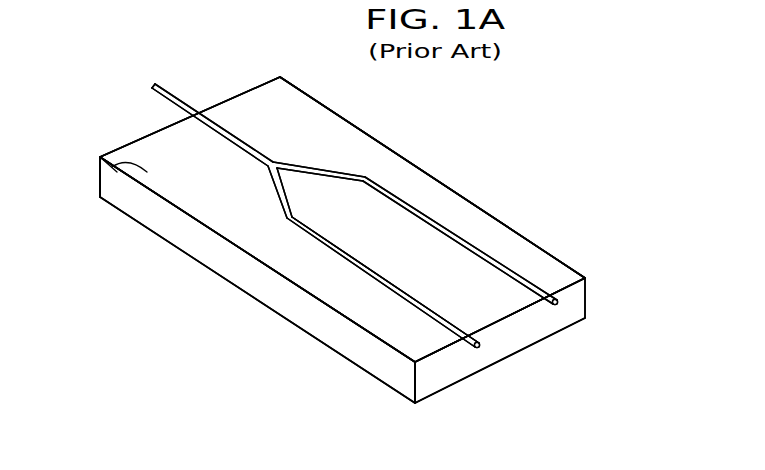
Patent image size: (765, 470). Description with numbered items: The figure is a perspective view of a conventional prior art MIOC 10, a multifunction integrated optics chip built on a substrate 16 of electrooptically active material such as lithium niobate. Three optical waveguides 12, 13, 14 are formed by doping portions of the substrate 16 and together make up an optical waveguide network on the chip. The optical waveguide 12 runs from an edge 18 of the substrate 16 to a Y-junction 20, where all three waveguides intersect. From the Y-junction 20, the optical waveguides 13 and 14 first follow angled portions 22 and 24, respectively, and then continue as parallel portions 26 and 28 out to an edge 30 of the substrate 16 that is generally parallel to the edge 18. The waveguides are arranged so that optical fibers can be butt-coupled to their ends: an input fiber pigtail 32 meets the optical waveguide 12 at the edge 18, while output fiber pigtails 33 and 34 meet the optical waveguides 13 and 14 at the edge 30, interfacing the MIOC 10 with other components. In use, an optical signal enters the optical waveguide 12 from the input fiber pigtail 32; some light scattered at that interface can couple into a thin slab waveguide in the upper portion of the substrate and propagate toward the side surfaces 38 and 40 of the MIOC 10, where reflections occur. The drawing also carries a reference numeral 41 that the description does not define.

The MIOC 10 is at (490, 112).
The optical waveguide 12 is at (237, 133).
The optical waveguide 13 is at (309, 229).
The optical waveguide 14 is at (430, 214).
The substrate 16 is at (134, 206).
The edge 18 is at (100, 168).
The Y-junction 20 is at (283, 142).
The angled portion 22 is at (279, 203).
The angled portion 24 is at (327, 167).
The parallel portion 26 is at (348, 258).
The parallel portion 28 is at (470, 242).
The edge 30 is at (520, 335).
The input fiber pigtail 32 is at (170, 92).
The output fiber pigtail 33 is at (472, 347).
The output fiber pigtail 34 is at (558, 302).
The side surface 38 is at (413, 403).
The side surface 40 is at (131, 143).
The back edge of substrate 41 is at (546, 250).